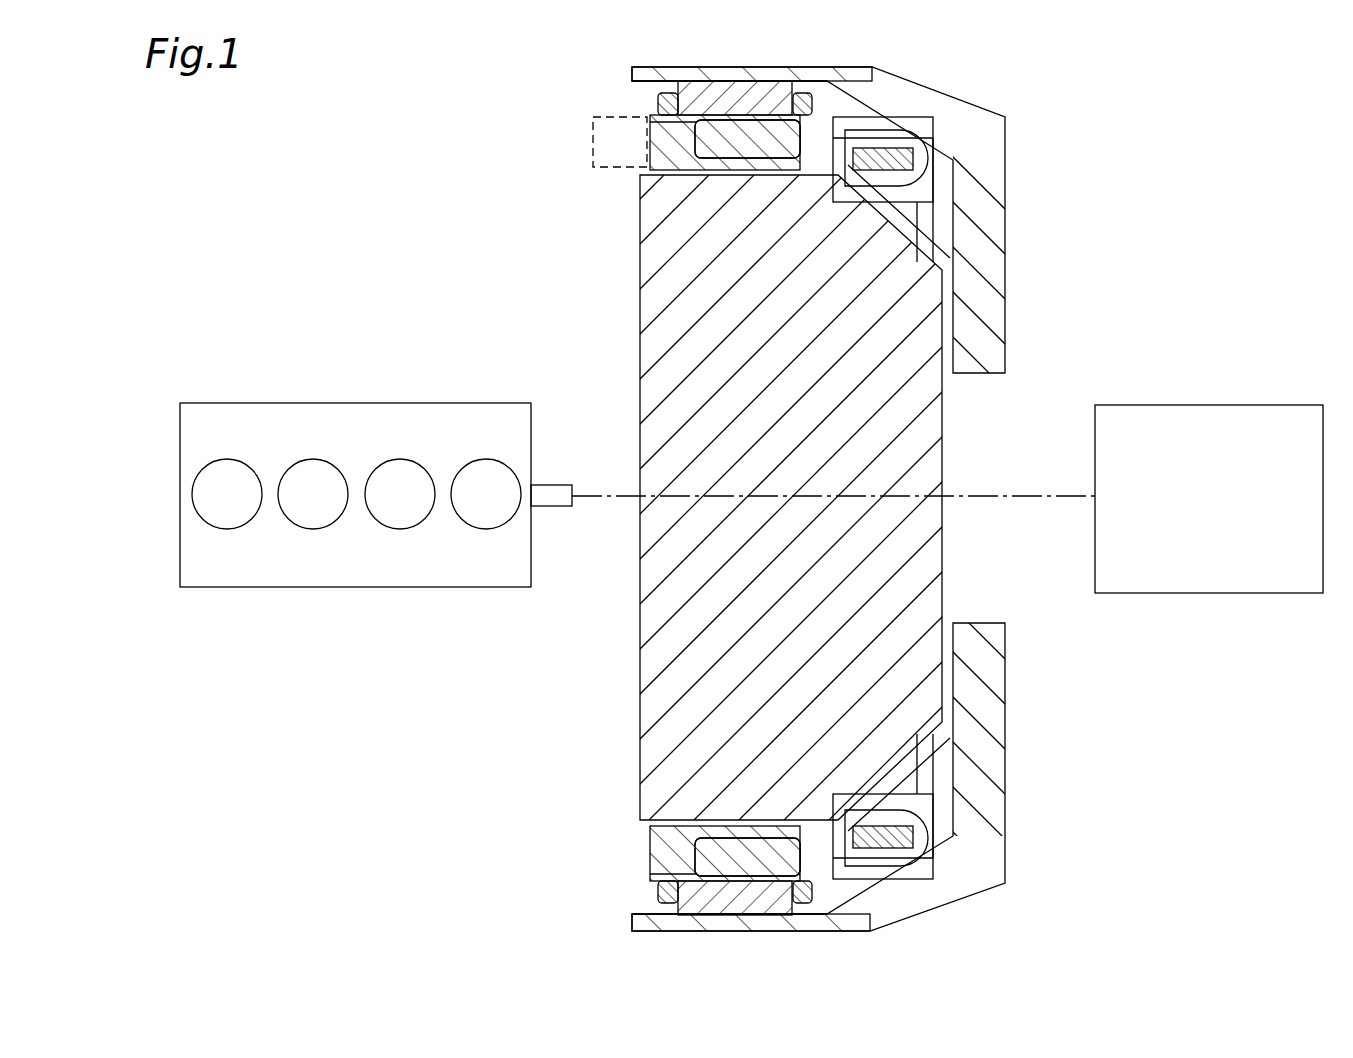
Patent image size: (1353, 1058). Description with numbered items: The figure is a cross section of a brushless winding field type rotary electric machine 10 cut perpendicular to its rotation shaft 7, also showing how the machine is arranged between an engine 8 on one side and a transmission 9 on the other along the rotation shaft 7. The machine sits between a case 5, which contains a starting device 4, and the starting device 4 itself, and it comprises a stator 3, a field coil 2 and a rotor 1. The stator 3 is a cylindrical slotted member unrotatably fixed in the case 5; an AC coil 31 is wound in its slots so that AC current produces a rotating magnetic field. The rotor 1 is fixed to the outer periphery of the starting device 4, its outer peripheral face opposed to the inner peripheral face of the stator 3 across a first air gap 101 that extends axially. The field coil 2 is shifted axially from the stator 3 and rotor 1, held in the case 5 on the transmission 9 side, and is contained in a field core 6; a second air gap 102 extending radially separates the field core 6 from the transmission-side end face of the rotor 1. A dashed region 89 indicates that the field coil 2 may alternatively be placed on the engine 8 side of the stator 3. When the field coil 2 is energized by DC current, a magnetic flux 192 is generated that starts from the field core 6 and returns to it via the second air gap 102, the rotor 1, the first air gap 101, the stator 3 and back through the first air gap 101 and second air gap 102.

The rotor 1 is at (648, 176).
The field coil 2 is at (945, 172).
The stator 3 is at (722, 97).
The starting device 4 is at (934, 432).
The case 5 is at (708, 78).
The field core 6 is at (930, 203).
The rotation shaft 7 is at (606, 494).
The engine 8 is at (355, 412).
The transmission 9 is at (1211, 423).
The rotary electric machine 10 is at (612, 92).
The AC coil 31 is at (676, 92).
The region 89 is at (598, 148).
The first air gap 101 is at (763, 112).
The second air gap 102 is at (888, 120).
The magnetic flux 192 is at (935, 160).